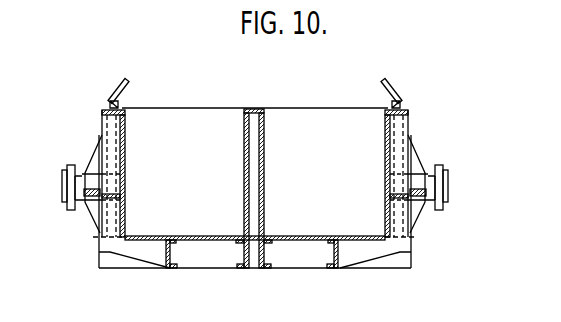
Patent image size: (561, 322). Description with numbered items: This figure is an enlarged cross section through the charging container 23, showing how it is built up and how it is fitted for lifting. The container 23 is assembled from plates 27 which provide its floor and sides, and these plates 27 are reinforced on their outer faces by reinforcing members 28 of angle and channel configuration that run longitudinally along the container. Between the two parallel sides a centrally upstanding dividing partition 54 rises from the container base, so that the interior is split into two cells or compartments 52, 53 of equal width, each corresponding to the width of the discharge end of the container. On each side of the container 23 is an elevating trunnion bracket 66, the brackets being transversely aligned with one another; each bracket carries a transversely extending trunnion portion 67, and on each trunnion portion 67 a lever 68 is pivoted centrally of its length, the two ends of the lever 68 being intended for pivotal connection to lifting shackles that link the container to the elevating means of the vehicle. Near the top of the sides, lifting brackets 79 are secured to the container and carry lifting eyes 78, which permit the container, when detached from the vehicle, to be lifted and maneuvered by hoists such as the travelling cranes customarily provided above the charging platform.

The container 23 is at (318, 108).
The plates 27 is at (122, 157).
The reinforcing members 28 is at (117, 206).
The cell or compartment 52 is at (192, 127).
The cell or compartment 53 is at (278, 108).
The dividing partition 54 is at (244, 178).
The elevating trunnion bracket 66 is at (88, 208).
The trunnion portion 67 is at (62, 179).
The lever 68 is at (75, 163).
The lifting eye 78 is at (110, 97).
The lifting bracket 79 is at (126, 82).